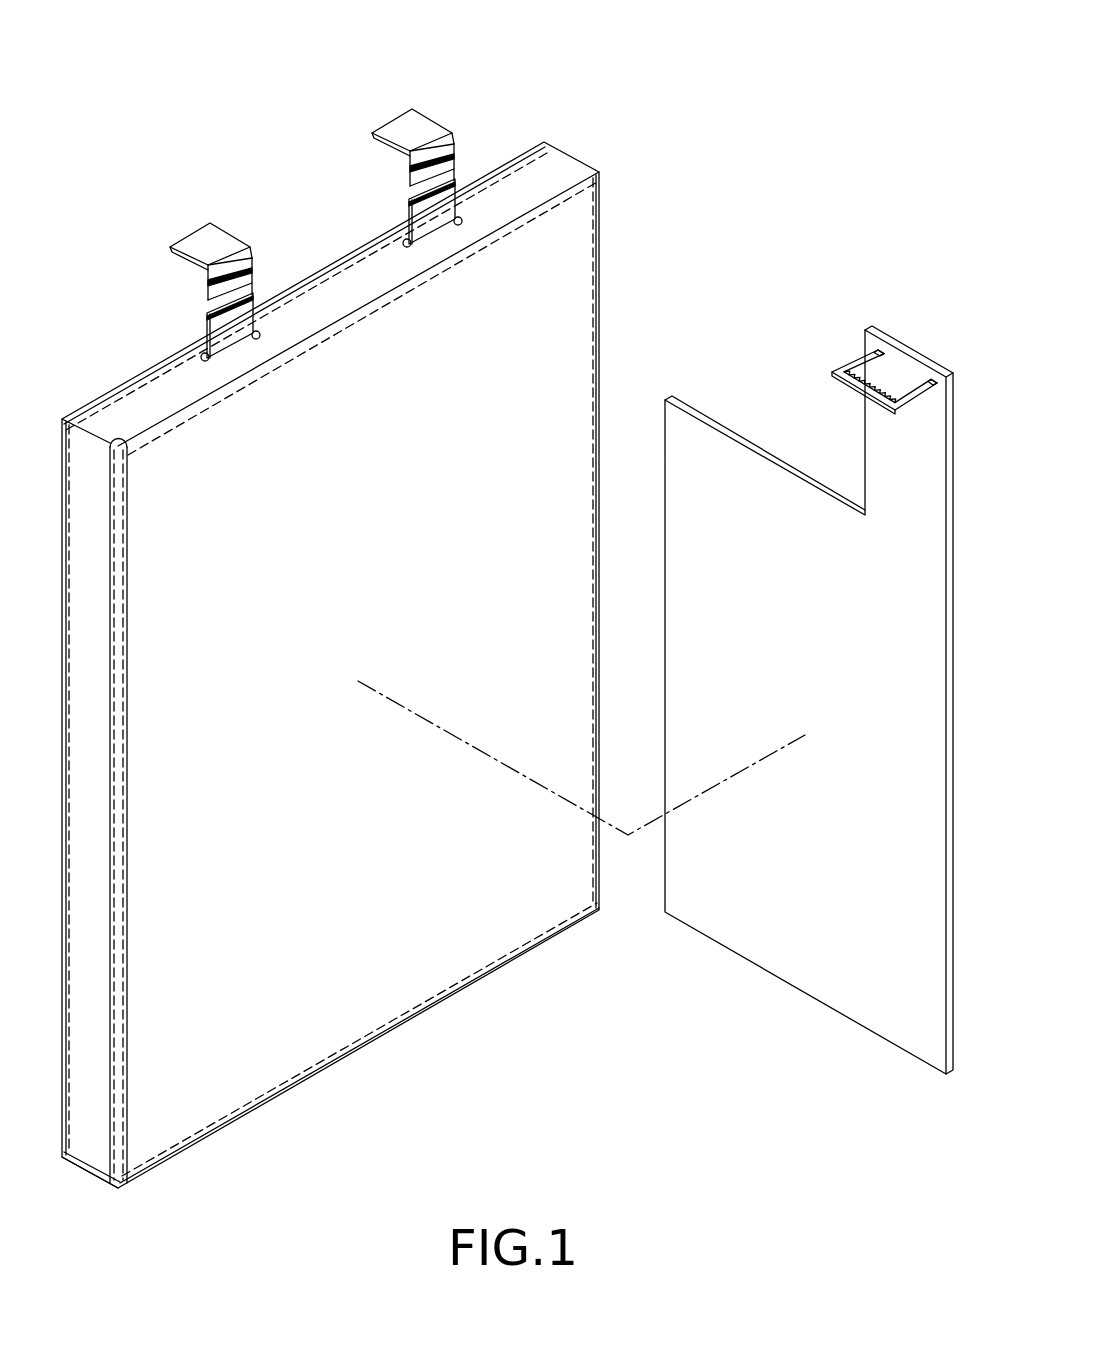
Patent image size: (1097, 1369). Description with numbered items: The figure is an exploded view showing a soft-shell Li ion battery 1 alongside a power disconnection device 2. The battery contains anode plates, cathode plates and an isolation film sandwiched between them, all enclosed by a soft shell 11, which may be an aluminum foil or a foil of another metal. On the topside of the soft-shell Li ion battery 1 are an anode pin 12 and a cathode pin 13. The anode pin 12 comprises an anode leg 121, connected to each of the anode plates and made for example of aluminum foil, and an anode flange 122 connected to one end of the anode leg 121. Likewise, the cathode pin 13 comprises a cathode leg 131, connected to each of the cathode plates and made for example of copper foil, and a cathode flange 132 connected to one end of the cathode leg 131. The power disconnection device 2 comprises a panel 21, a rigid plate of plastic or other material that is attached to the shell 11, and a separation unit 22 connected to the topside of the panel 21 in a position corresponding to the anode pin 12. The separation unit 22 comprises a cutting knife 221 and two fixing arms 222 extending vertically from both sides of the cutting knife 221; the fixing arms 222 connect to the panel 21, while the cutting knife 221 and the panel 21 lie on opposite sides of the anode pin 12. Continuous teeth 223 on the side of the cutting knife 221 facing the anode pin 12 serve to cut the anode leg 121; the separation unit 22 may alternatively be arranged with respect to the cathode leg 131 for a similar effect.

The soft-shell Li ion battery 1 is at (433, 594).
The soft shell 11 is at (578, 284).
The anode pin 12 is at (218, 236).
The anode leg 121 is at (247, 278).
The anode flange 122 is at (208, 237).
The cathode pin 13 is at (419, 123).
The cathode leg 131 is at (447, 165).
The cathode flange 132 is at (400, 122).
The power disconnection device 2 is at (814, 681).
The panel 21 is at (750, 443).
The separation unit 22 is at (861, 370).
The cutting knife 221 is at (855, 388).
The fixing arms 222 is at (920, 384).
The continuous teeth 223 is at (882, 395).